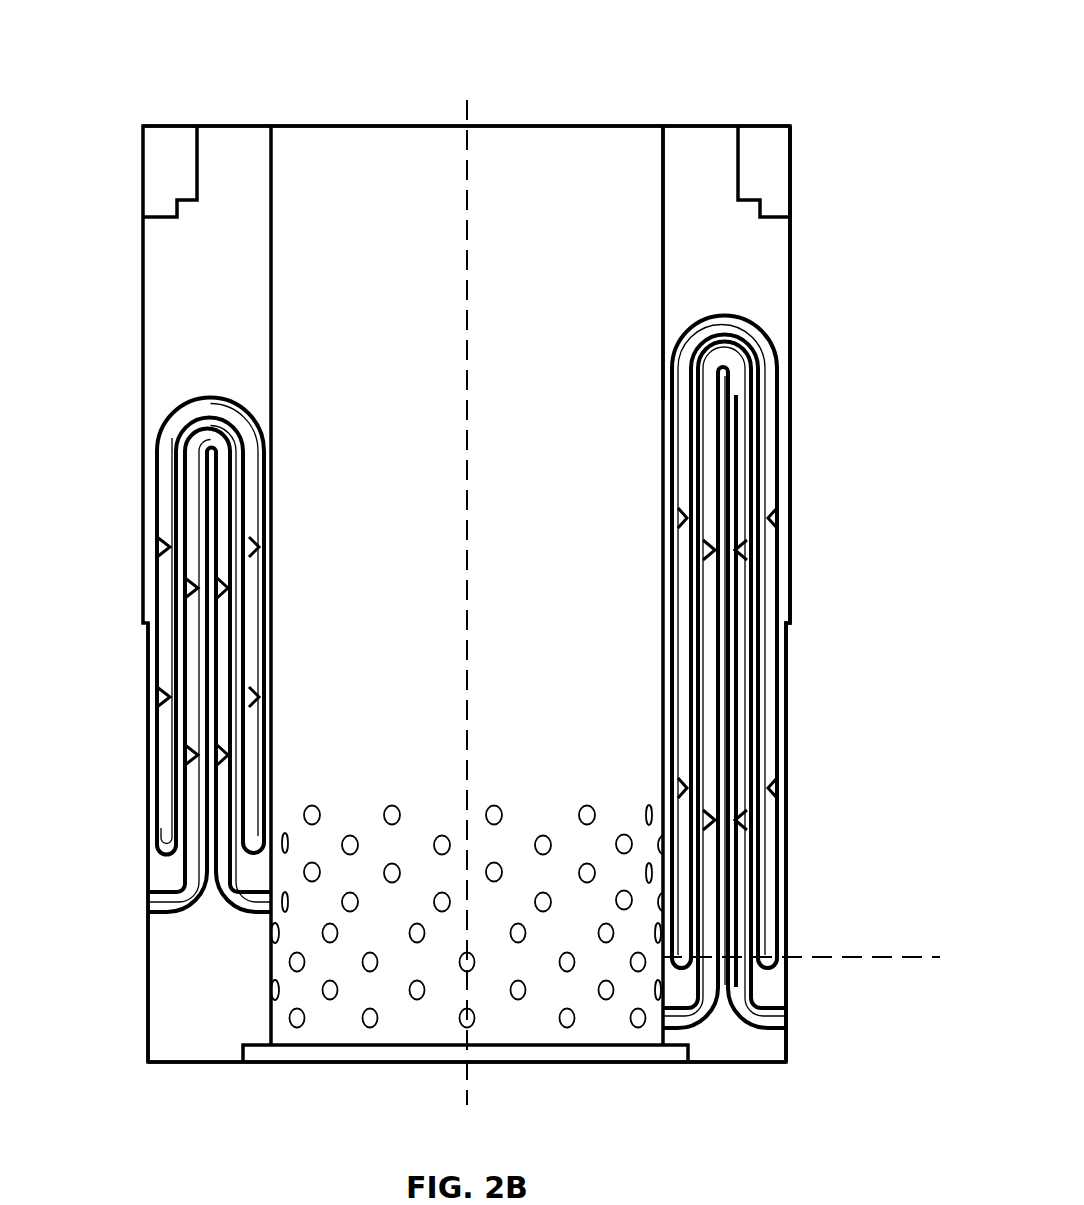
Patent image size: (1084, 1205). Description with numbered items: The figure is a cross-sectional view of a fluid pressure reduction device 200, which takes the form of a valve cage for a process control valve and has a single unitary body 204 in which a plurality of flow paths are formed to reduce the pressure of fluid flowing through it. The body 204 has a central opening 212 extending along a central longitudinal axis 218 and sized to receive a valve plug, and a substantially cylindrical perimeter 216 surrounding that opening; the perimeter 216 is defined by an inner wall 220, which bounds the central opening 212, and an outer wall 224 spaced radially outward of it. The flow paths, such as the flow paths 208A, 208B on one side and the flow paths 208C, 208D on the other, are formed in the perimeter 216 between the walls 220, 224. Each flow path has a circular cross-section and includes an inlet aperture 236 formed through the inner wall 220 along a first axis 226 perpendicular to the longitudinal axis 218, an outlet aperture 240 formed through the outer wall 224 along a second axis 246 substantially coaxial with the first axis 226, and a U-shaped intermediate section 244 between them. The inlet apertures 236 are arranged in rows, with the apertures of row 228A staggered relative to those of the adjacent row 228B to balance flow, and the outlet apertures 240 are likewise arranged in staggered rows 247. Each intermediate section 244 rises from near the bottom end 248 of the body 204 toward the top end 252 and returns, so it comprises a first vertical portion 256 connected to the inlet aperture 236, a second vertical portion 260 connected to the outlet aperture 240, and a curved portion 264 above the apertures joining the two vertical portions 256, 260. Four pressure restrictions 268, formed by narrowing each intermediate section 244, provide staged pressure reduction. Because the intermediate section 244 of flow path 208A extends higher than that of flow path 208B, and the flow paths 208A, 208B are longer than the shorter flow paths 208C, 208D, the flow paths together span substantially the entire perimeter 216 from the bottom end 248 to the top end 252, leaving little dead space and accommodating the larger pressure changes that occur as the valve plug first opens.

The fluid pressure reduction device 200 is at (800, 80).
The unitary body 204 is at (808, 256).
The flow path 208A is at (782, 375).
The flow path 208B is at (754, 418).
The flow path 208C is at (156, 450).
The flow path 208D is at (197, 522).
The central opening 212 is at (663, 153).
The substantially cylindrical perimeter 216 is at (733, 228).
The central longitudinal axis 218 is at (478, 140).
The inner wall 220 is at (665, 178).
The outer wall 224 is at (791, 228).
The first axis 226 is at (899, 952).
The row of inlet apertures 228A is at (289, 962).
The row of inlet apertures 228B is at (270, 933).
The inlet aperture 236 is at (288, 892).
The outlet aperture 240 is at (146, 722).
The intermediate section 244 is at (250, 394).
The second axis 246 is at (801, 929).
The row of outlet apertures 247 is at (146, 851).
The bottom end 248 is at (759, 1064).
The top end 252 is at (707, 126).
The first vertical portion 256 is at (690, 440).
The second vertical portion 260 is at (777, 601).
The curved portion 264 is at (733, 322).
The pressure restriction 268 is at (780, 516).